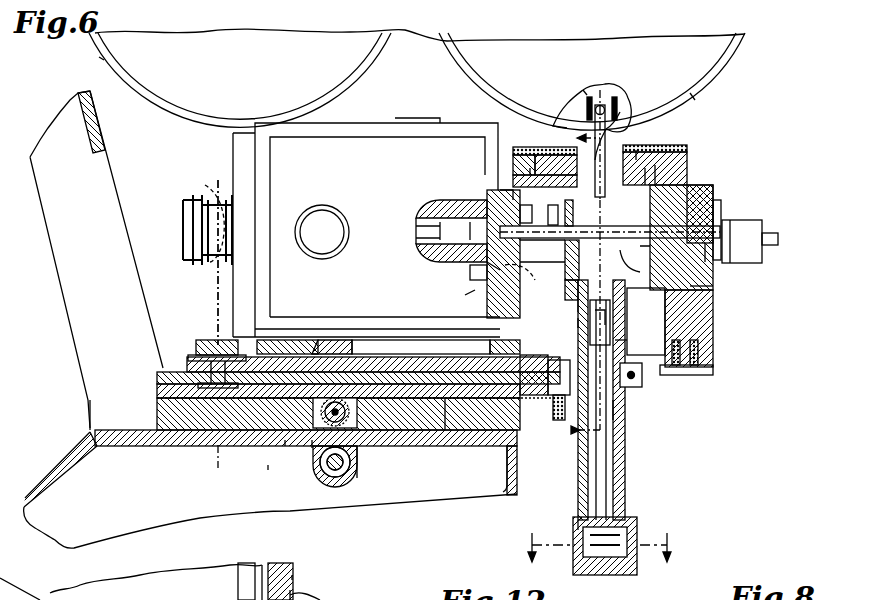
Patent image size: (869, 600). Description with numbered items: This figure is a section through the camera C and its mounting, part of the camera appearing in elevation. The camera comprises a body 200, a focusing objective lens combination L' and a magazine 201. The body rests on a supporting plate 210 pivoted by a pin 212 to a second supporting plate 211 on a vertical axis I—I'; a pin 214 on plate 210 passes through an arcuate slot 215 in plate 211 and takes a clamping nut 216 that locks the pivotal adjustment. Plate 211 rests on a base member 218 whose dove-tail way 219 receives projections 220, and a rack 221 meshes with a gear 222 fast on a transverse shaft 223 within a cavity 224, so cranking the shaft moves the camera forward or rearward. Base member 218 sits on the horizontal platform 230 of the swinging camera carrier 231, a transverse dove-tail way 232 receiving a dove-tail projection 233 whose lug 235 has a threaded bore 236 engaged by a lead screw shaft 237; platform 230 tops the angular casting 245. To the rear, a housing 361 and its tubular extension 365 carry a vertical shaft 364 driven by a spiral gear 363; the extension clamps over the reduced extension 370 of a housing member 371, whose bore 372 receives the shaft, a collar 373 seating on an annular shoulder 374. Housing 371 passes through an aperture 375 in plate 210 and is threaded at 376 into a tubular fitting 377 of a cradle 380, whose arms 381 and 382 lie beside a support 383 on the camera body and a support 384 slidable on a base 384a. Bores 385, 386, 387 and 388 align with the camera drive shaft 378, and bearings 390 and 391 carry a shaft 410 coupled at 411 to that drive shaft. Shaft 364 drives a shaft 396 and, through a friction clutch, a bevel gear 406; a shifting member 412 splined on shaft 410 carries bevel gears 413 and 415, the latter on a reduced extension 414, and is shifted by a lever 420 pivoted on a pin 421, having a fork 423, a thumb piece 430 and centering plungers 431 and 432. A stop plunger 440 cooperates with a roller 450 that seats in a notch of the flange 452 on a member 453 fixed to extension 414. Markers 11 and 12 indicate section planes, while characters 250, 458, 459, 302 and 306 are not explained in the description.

In FIG. 6, the magazine 201 is at (731, 60).
In FIG. 6, the camera C is at (97, 59).
In FIG. 6, the camera body 200 is at (300, 158).
In FIG. 6, the supporting plate 210 is at (250, 335).
In FIG. 6, the objective lens combination L' is at (200, 214).
In FIG. 6, the vertical axis I is at (214, 253).
In FIG. 6, the pivot arm 250 is at (96, 259).
In FIG. 6, the pin 212 is at (218, 342).
In FIG. 6, the second supporting plate 211 is at (162, 374).
In FIG. 6, the base member 218 is at (175, 436).
In FIG. 6, the transverse dove-tail way 232 is at (255, 440).
In FIG. 6, the rack 221 is at (150, 440).
In FIG. 6, the casting 245 is at (50, 472).
In FIG. 6, the swinging camera carrier 231 is at (66, 445).
In FIG. 6, the horizontal platform 230 is at (195, 445).
In FIG. 6, the cavity 224 is at (347, 425).
In FIG. 6, the longitudinal dove-tail way 219 is at (446, 432).
In FIG. 6, the projections 220 is at (478, 440).
In FIG. 6, the screw-threaded bore 236 is at (336, 476).
In FIG. 6, the lug 235 is at (330, 468).
In FIG. 6, the lead screw shaft 237 is at (348, 478).
In FIG. 6, the shaft 223 is at (286, 445).
In FIG. 6, the dove-tail projection 233 is at (270, 468).
In FIG. 6, the gear 222 is at (312, 445).
In FIG. 6, the vertical axis I' is at (215, 469).
In FIG. 6, the camera drive shaft 378 is at (445, 233).
In FIG. 6, the cradle member 380 is at (512, 298).
In FIG. 6, the bearing 390 is at (470, 270).
In FIG. 6, the bore 387 is at (492, 270).
In FIG. 6, the support 383 is at (510, 278).
In FIG. 6, the plunger 440 is at (466, 296).
In FIG. 6, the roller 450 is at (548, 152).
In FIG. 6, the supporting arm 381 is at (488, 192).
In FIG. 6, the bore 385 is at (480, 200).
In FIG. 6, the drive coupling 411 is at (530, 170).
In FIG. 6, the member 453 is at (539, 211).
In FIG. 6, the flange 452 is at (578, 212).
In FIG. 6, the reduced extension 414 is at (549, 260).
In FIG. 6, the supporting arm 382 is at (672, 156).
In FIG. 6, the bevel gear 413 is at (657, 168).
In FIG. 6, the gear shifting member 412 is at (648, 170).
In FIG. 6, the fork 423 is at (638, 152).
In FIG. 6, the centering plunger 432 is at (693, 95).
In FIG. 6, the manual shifting lever 420 is at (622, 110).
In FIG. 12, the manual shifting lever 420 is at (275, 566).
In FIG. 6, the pin 421 is at (633, 118).
In FIG. 6, the centering plunger 431 is at (577, 130).
In FIG. 6, the thumb piece 430 is at (612, 62).
In FIG. 6, the section line 12 is at (571, 286).
In FIG. 6, the bore 388 is at (692, 290).
In FIG. 6, the base 384a is at (706, 343).
In FIG. 6, the bearing 391 is at (692, 288).
In FIG. 6, the shaft 410 is at (712, 262).
In FIG. 6, the support 384 is at (719, 196).
In FIG. 6, the bore 386 is at (736, 216).
In FIG. 6, the shaft 396 is at (613, 300).
In FIG. 6, the bevel gear 406 is at (638, 260).
In FIG. 6, the aperture 375 is at (620, 318).
In FIG. 6, the collar 373 is at (615, 345).
In FIG. 6, the housing member 371 is at (668, 368).
In FIG. 6, the tubular vertical extension 365 is at (624, 480).
In FIG. 6, the vertical shaft 364 is at (600, 462).
In FIG. 6, the bore 372 is at (590, 325).
In FIG. 6, the spiral gear 363 is at (580, 568).
In FIG. 6, the housing 361 is at (578, 520).
In FIG. 6, the annular housing shoulder 374 is at (641, 382).
In FIG. 6, the reduced tubular extension 370 is at (618, 405).
In FIG. 6, the section line 11 is at (603, 537).
In FIG. 6, the pin 214 is at (556, 366).
In FIG. 6, the arcuate slot 215 is at (553, 398).
In FIG. 6, the clamping nut 216 is at (553, 415).
In FIG. 6, the bevel gear 415 is at (576, 290).
In FIG. 6, the tubular fitting 377 is at (578, 305).
In FIG. 6, the screw thread 376 is at (578, 322).
In FIG. 12, the part 459 is at (294, 577).
In FIG. 12, the part 458 is at (291, 592).
In FIG. 8, the part 306 is at (638, 592).
In FIG. 8, the part 302 is at (667, 592).